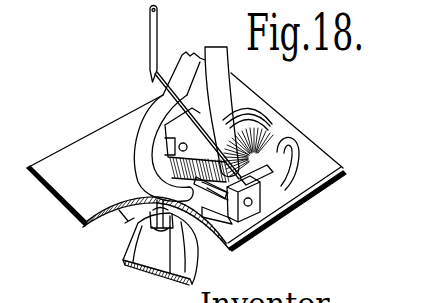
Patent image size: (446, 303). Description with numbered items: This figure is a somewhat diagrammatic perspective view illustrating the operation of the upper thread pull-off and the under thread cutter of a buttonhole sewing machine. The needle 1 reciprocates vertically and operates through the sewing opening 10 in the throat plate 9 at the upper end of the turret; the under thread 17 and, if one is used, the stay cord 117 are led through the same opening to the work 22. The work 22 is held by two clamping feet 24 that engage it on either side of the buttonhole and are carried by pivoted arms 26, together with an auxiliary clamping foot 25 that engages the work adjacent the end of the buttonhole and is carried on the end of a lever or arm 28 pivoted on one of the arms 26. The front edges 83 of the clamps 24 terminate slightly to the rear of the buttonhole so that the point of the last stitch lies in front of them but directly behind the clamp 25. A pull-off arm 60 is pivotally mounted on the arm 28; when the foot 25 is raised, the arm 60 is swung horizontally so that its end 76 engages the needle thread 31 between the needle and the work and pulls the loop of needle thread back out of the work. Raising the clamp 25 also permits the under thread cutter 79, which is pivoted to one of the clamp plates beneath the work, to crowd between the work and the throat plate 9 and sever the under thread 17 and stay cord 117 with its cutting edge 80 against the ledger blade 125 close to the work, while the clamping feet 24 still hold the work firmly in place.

The needle 1 is at (158, 24).
The throat plate 9 is at (147, 224).
The sewing opening 10 is at (148, 230).
The under thread 17 is at (147, 263).
The work 22 is at (305, 145).
The clamping feet 24 is at (238, 110).
The auxiliary clamping foot 25 is at (136, 179).
The arms 26 is at (325, 158).
The lever or arm 28 is at (150, 117).
The needle thread 31 is at (180, 107).
The pull-off arm 60 is at (226, 81).
The end of pull-off arm 76 is at (254, 150).
The under thread cutter 79 is at (200, 247).
The cutting edge 80 is at (170, 276).
The front edges of the clamps 83 is at (250, 226).
The stay cord 117 is at (124, 260).
The ledger blade 125 is at (145, 218).